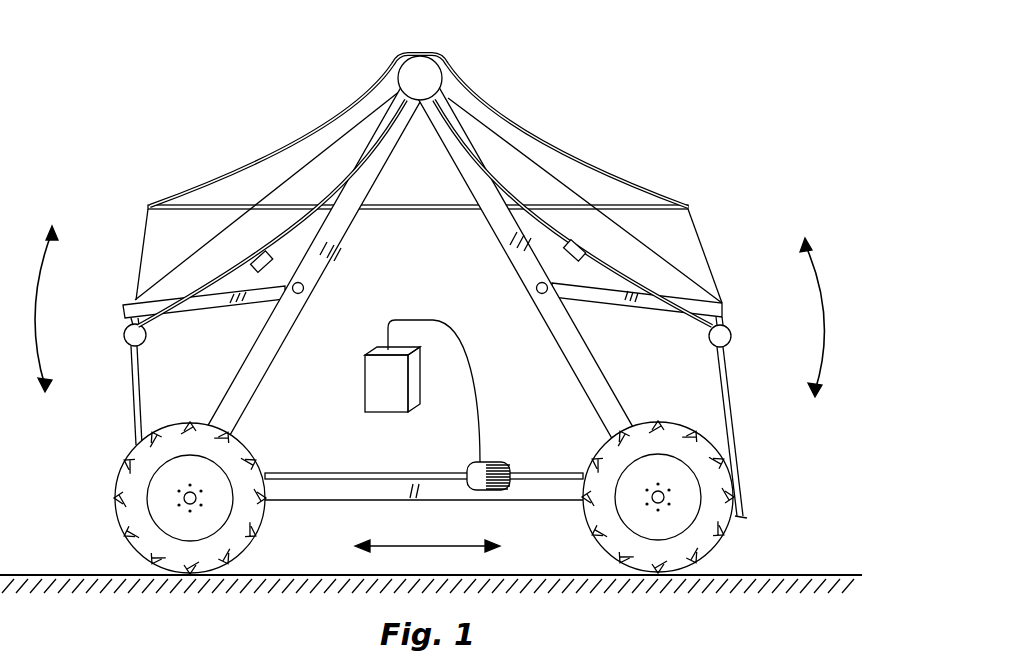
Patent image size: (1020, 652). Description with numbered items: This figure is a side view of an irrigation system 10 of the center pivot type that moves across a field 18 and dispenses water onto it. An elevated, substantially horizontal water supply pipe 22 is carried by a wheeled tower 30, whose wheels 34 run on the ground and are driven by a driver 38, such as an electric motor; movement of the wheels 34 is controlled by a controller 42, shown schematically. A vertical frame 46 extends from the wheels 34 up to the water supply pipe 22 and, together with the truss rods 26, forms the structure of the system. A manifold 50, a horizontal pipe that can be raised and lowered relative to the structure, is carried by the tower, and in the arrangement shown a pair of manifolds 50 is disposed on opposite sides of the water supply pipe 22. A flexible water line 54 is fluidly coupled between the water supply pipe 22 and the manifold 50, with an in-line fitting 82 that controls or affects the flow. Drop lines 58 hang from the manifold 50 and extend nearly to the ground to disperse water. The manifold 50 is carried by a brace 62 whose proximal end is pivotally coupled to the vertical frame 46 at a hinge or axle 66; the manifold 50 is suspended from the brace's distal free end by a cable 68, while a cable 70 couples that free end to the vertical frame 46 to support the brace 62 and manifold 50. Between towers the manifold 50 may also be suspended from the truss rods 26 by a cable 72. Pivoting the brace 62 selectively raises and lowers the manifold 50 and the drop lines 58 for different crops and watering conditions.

The irrigation system 10 is at (568, 96).
The field 18 is at (720, 583).
The water supply pipe 22 is at (418, 66).
The truss rods 26 is at (210, 183).
The wheeled tower 30 is at (360, 175).
The wheels 34 is at (172, 553).
The driver 38 is at (497, 462).
The controller 42 is at (377, 383).
The vertical frame 46 is at (477, 188).
The manifold 50 is at (733, 337).
The water line 54 is at (528, 190).
The drop lines 58 is at (735, 438).
The brace 62 is at (150, 306).
The hinge or axle 66 is at (306, 300).
The cable 68 is at (120, 319).
The cable 70 is at (277, 187).
The cable 72 is at (140, 237).
The fitting 82 is at (640, 180).